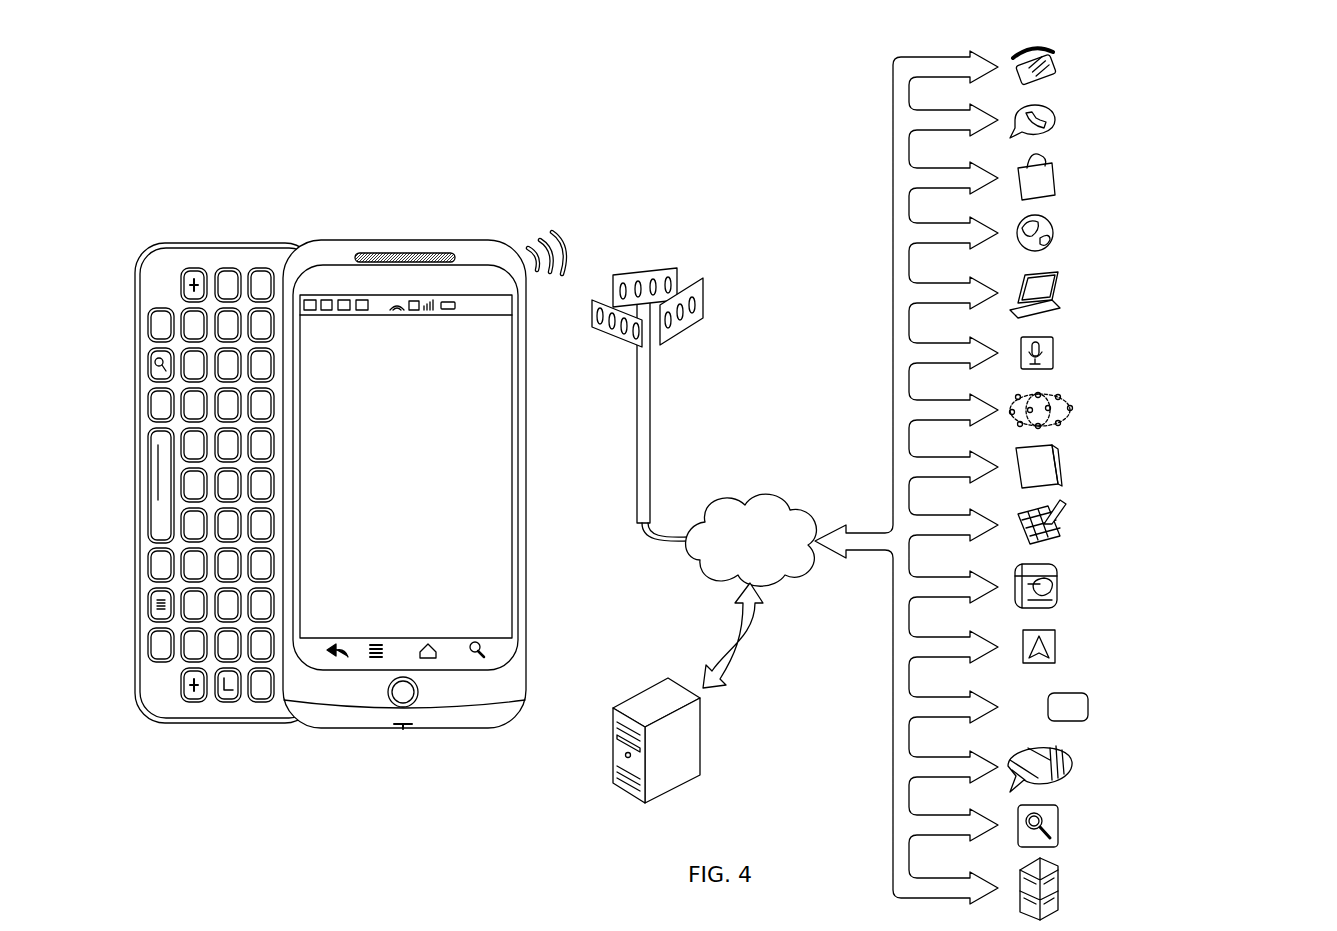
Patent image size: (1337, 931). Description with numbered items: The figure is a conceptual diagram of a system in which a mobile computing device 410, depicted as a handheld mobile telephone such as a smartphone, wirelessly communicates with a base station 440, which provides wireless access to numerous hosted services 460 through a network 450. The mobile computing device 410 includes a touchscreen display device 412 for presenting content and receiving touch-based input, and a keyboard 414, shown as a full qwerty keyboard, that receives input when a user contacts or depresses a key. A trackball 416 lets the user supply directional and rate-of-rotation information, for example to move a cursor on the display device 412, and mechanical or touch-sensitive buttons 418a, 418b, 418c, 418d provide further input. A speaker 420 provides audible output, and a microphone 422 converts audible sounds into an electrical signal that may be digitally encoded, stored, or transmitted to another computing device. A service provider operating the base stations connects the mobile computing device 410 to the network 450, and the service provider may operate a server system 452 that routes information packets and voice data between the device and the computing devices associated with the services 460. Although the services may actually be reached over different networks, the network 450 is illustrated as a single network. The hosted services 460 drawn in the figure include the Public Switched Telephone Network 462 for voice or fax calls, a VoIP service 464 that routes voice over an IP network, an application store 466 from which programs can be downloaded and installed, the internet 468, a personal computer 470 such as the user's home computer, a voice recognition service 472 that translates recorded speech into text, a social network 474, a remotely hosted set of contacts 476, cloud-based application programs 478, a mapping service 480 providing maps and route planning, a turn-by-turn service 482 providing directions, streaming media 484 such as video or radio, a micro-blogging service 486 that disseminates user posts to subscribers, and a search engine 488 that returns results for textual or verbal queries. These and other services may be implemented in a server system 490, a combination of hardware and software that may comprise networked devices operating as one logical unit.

The mobile computing device 410 is at (466, 180).
The touchscreen display device 412 is at (527, 472).
The keyboard 414 is at (258, 241).
The trackball 416 is at (418, 692).
The button 418a is at (334, 645).
The button 418b is at (377, 640).
The button 418c is at (428, 645).
The button 418d is at (475, 642).
The speaker 420 is at (414, 252).
The microphone 422 is at (400, 728).
The base station 440 is at (707, 166).
The network 450 is at (752, 498).
The service provider server system 452 is at (701, 740).
The hosted services 460 is at (993, 47).
The Public Switched Telephone Network (PSTN) 462 is at (1056, 70).
The Voice over Internet Protocol (VoIP) service 464 is at (1056, 120).
The application store 466 is at (1056, 178).
The internet 468 is at (1054, 235).
The personal computer 470 is at (1058, 290).
The voice recognition service 472 is at (1054, 348).
The social network 474 is at (1068, 402).
The contacts 476 is at (1058, 470).
The cloud-based application programs 478 is at (1058, 528).
The mapping service 480 is at (1058, 582).
The turn-by-turn service 482 is at (1056, 645).
The streaming media 484 is at (1088, 701).
The micro-blogging service 486 is at (1070, 766).
The search engine 488 is at (1058, 825).
The server system 490 is at (1058, 886).